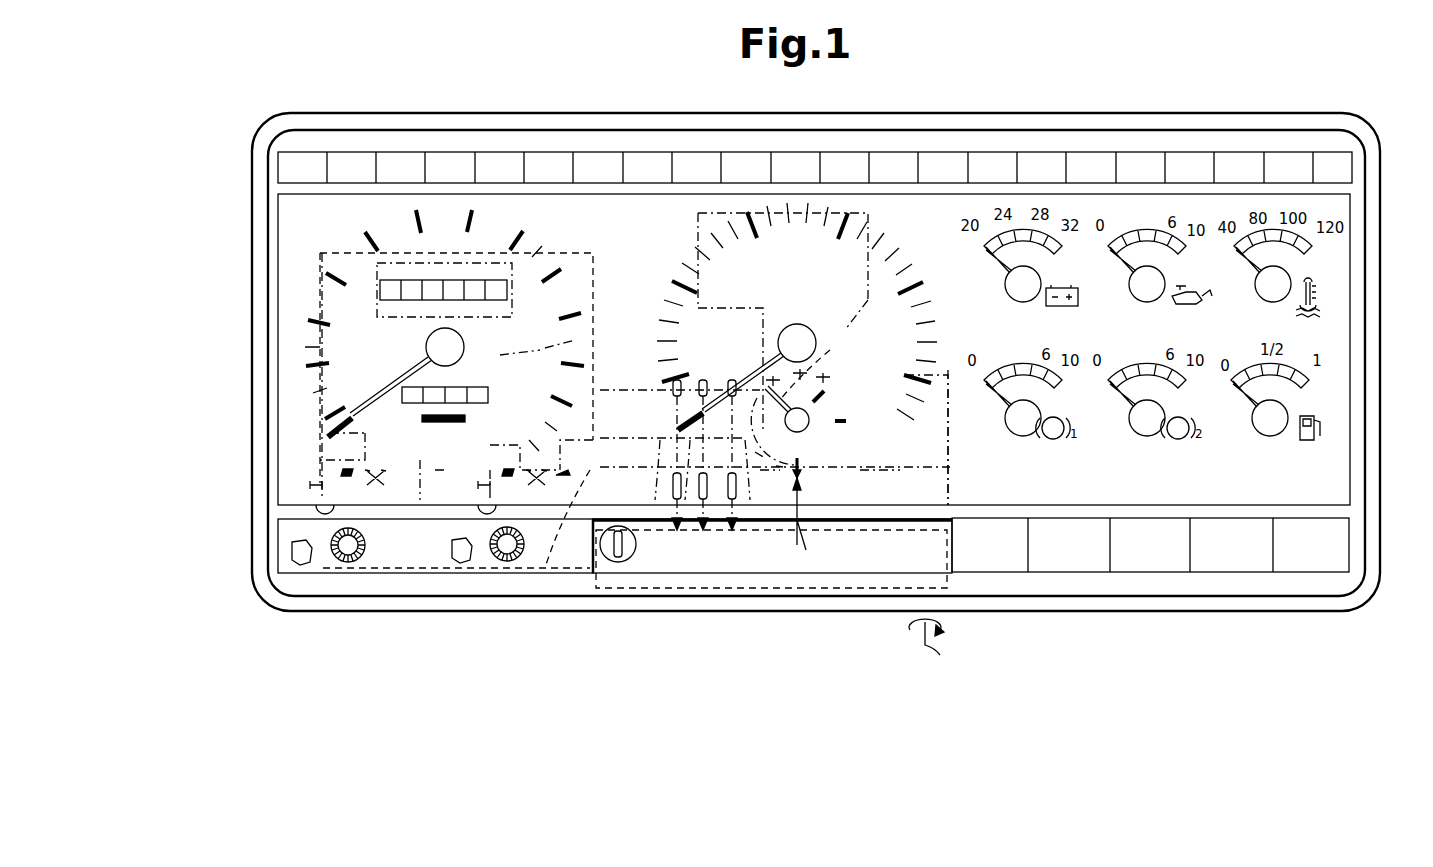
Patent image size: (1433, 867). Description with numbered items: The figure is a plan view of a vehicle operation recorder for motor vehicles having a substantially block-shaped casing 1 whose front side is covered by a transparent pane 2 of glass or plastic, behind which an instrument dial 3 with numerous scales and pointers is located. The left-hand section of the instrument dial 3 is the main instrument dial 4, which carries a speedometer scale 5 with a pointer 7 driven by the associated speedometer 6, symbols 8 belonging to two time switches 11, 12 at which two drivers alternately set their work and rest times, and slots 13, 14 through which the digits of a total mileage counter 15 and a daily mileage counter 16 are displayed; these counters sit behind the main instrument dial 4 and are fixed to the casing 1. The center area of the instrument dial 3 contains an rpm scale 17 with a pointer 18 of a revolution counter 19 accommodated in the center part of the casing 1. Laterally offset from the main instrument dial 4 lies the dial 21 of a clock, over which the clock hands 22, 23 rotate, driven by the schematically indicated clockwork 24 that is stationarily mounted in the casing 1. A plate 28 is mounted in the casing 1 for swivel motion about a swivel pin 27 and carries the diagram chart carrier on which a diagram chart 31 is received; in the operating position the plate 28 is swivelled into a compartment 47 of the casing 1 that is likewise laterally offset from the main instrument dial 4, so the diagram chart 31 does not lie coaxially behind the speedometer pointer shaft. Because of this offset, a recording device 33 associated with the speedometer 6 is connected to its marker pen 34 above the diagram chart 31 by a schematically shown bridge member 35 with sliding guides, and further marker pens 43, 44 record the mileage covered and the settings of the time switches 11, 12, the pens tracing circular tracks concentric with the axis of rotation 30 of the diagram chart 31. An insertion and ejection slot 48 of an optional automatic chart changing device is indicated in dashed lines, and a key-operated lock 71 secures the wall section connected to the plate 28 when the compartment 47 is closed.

The casing 1 is at (418, 612).
The transparent pane 2 is at (273, 475).
The instrument dial 3 is at (831, 560).
The main instrument dial 4 is at (574, 292).
The speedometer scale 5 is at (514, 233).
The speedometer 6 is at (573, 336).
The pointer 7 is at (383, 382).
The symbols 8 is at (562, 473).
The time switch 11 is at (346, 555).
The time switch 12 is at (509, 555).
The slot 13 is at (401, 282).
The slot 14 is at (468, 404).
The total mileage counter 15 is at (453, 288).
The daily mileage counter 16 is at (416, 404).
The rpm scale 17 is at (895, 244).
The pointer 18 is at (750, 372).
The revolution counter 19 is at (714, 214).
The dial of the clock 21 is at (810, 444).
The clock hand 22 is at (832, 352).
The clock hand 23 is at (824, 406).
The clockwork 24 is at (958, 471).
The swivel pin 27 is at (941, 655).
The plate 28 is at (872, 586).
The axis of rotation 30 is at (887, 366).
The diagram chart 31 is at (806, 555).
The recording device 33 is at (818, 430).
The marker pen 34 is at (676, 532).
The bridge member 35 is at (611, 388).
The marker pen 43 is at (731, 532).
The marker pen 44 is at (745, 530).
The compartment 47 is at (597, 585).
The insertion and ejection slot 48 is at (703, 532).
The lock 71 is at (618, 562).